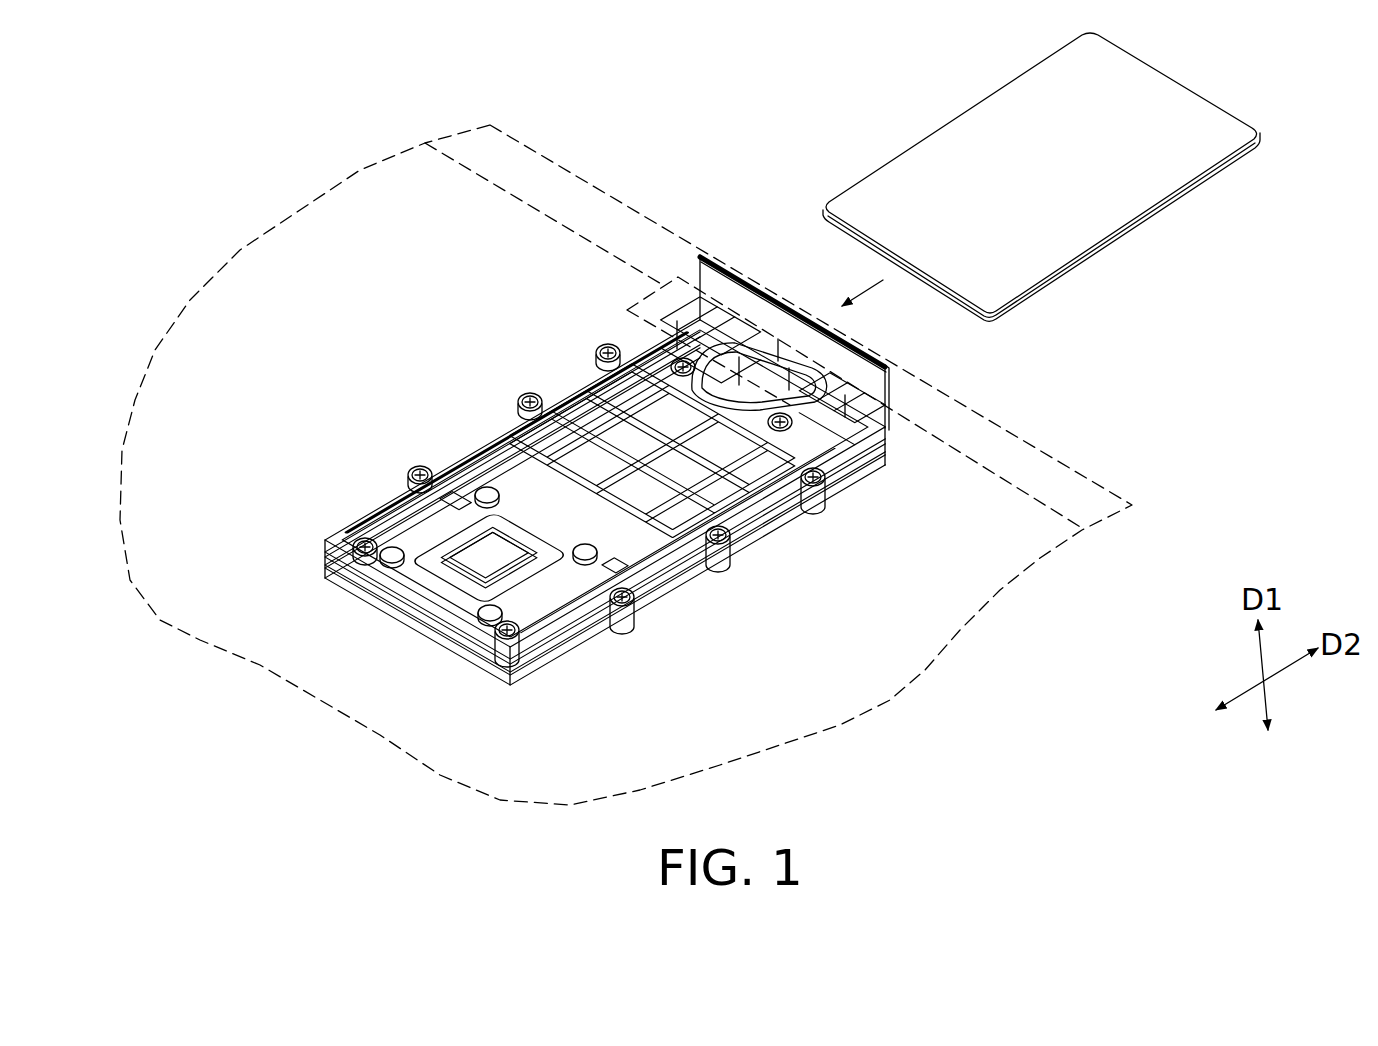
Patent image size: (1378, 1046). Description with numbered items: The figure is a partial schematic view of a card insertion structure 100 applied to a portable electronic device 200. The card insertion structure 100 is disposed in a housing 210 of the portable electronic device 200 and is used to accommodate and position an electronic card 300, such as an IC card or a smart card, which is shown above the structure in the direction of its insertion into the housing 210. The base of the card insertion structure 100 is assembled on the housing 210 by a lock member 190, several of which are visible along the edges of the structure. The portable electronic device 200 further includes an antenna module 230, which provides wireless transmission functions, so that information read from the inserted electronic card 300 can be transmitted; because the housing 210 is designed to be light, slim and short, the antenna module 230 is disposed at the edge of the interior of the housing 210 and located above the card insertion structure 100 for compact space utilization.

The card insertion structure 100 is at (403, 645).
The lock member 190 is at (413, 468).
The portable electronic device 200 is at (235, 230).
The housing 210 is at (753, 302).
The antenna module 230 is at (915, 422).
The electronic card 300 is at (1140, 193).